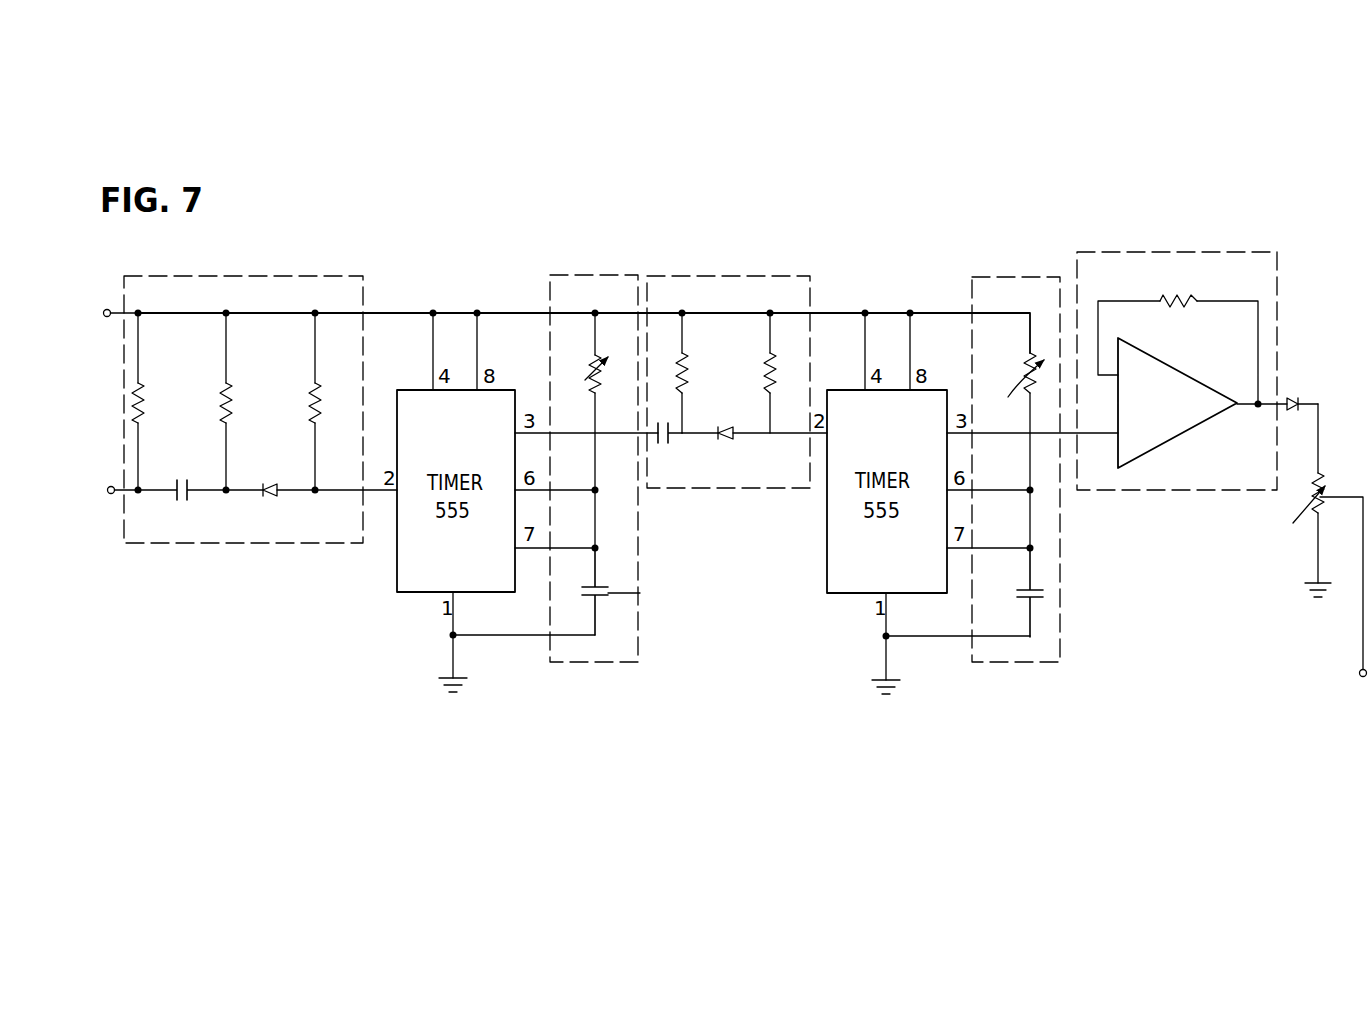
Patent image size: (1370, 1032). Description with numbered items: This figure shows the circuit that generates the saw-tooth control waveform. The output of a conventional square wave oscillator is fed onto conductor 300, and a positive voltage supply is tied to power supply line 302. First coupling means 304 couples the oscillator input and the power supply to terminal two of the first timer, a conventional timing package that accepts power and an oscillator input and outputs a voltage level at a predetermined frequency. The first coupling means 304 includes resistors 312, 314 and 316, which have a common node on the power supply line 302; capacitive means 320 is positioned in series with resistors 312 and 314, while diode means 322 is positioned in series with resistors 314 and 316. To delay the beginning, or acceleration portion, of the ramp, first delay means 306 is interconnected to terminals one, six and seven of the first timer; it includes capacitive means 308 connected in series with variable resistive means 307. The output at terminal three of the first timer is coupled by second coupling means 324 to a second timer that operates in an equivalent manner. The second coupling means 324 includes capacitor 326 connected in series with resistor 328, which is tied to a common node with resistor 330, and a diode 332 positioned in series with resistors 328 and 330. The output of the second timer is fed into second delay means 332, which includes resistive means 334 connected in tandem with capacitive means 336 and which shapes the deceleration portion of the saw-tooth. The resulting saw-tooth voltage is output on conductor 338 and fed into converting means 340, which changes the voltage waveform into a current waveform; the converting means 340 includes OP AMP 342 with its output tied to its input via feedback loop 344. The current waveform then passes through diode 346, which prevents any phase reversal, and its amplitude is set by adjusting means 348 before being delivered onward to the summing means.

The conductor 300 is at (118, 493).
The power supply line 302 is at (112, 311).
The first coupling means 304 is at (320, 276).
The first delay means 306 is at (592, 275).
The variable resistive means 307 is at (595, 430).
The capacitive means 308 is at (603, 597).
The resistor 312 is at (142, 392).
The resistor 314 is at (230, 392).
The resistor 316 is at (319, 392).
The capacitive means 320 is at (184, 484).
The diode means 322 is at (268, 486).
The second coupling means 324 is at (765, 276).
The capacitor 326 is at (665, 415).
The resistor 328 is at (686, 366).
The resistor 330 is at (768, 373).
The second delay means 332 is at (722, 429).
The resistive means 334 is at (1015, 450).
The capacitive means 336 is at (1017, 595).
The conductor 338 is at (1063, 433).
The converting means 340 is at (1185, 252).
The OP AMP 342 is at (1173, 445).
The feedback loop 344 is at (1257, 303).
The diode 346 is at (1293, 399).
The adjusting means 348 is at (1259, 540).